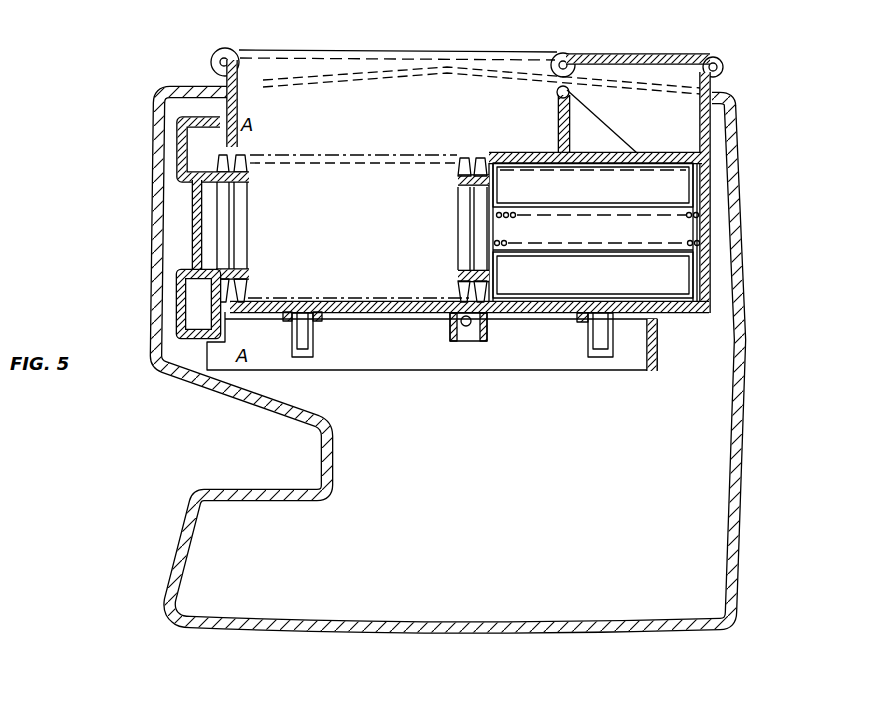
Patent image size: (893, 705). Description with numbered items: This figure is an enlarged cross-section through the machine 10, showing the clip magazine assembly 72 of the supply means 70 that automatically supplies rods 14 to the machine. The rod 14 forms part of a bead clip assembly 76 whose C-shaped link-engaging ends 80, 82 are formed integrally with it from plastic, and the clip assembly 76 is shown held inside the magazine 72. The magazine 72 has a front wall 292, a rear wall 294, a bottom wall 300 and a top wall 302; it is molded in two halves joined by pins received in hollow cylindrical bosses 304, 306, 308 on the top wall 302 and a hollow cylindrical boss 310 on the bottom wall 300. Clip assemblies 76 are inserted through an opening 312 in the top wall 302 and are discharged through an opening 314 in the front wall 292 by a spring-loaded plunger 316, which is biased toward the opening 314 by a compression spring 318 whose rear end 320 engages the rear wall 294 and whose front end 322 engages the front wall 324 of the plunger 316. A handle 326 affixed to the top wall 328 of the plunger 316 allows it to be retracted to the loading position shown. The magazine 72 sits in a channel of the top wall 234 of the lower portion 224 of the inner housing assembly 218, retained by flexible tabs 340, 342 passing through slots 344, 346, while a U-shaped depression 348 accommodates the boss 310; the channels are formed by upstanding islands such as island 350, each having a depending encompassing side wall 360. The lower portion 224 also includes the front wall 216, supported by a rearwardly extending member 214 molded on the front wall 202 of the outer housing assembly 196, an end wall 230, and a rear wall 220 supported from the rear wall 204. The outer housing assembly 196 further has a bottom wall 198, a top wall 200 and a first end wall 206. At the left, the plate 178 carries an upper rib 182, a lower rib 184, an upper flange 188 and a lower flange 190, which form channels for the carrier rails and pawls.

The machine 10 is at (80, 98).
The rod 14 is at (243, 235).
The supply means 70 is at (185, 250).
The clip magazine assembly 72 is at (296, 100).
The bead clip assembly 76 is at (252, 251).
The link-engaging end 80 is at (247, 172).
The link-engaging end 82 is at (247, 288).
The plate 178 is at (188, 203).
The upper rib 182 is at (213, 175).
The lower rib 184 is at (210, 280).
The upper flange 188 is at (204, 122).
The lower flange 190 is at (193, 337).
The outer housing assembly 196 is at (750, 515).
The bottom wall 198 is at (493, 633).
The top wall 200 is at (716, 93).
The front wall 202 is at (174, 563).
The rear wall 204 is at (746, 418).
The first end wall 206 is at (515, 533).
The rearwardly extending member 214 is at (327, 457).
The front wall 216 is at (195, 378).
The inner housing assembly 218 is at (492, 380).
The rear wall 220 is at (660, 363).
The lower portion 224 is at (575, 370).
The end wall 230 is at (397, 356).
The top wall 234 is at (566, 309).
The front wall 292 is at (238, 100).
The rear wall 294 is at (707, 157).
The bottom wall 300 is at (373, 298).
The top wall 302 is at (640, 54).
The hollow cylindrical boss 304 is at (231, 50).
The hollow cylindrical boss 306 is at (566, 58).
The hollow cylindrical boss 308 is at (722, 62).
The hollow cylindrical boss 310 is at (466, 342).
The opening 312 is at (515, 34).
The opening 314 is at (240, 148).
The spring-loaded plunger 316 is at (709, 276).
The compression spring 318 is at (508, 242).
The rear end 320 is at (695, 243).
The front end 322 is at (498, 207).
The front wall 324 is at (488, 204).
The handle 326 is at (558, 112).
The top wall 328 is at (672, 138).
The flexible tab 340 is at (295, 339).
The flexible tab 342 is at (602, 343).
The slot 344 is at (319, 330).
The slot 346 is at (617, 330).
The U-shaped depression 348 is at (475, 341).
The upstanding island 350 is at (333, 167).
The depending encompassing side wall 360 is at (357, 193).